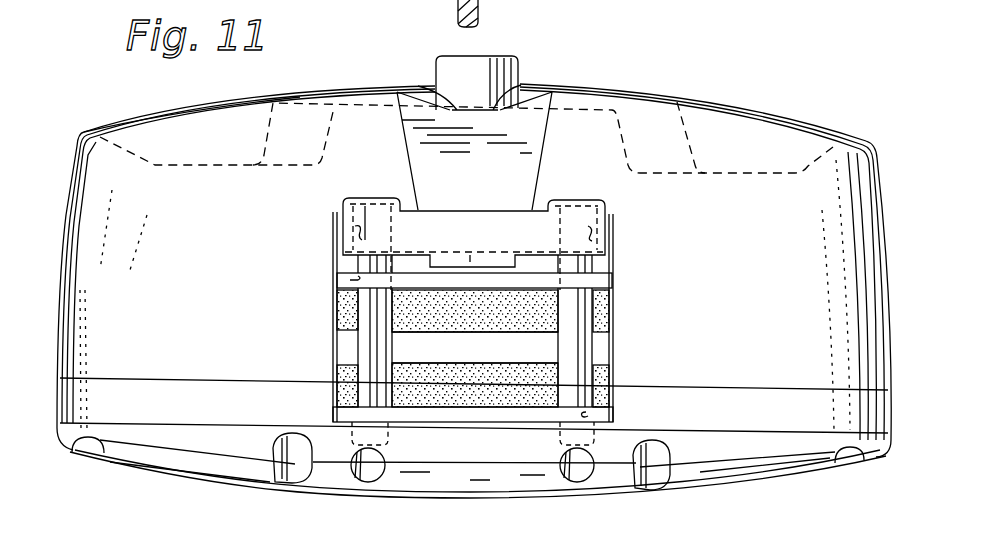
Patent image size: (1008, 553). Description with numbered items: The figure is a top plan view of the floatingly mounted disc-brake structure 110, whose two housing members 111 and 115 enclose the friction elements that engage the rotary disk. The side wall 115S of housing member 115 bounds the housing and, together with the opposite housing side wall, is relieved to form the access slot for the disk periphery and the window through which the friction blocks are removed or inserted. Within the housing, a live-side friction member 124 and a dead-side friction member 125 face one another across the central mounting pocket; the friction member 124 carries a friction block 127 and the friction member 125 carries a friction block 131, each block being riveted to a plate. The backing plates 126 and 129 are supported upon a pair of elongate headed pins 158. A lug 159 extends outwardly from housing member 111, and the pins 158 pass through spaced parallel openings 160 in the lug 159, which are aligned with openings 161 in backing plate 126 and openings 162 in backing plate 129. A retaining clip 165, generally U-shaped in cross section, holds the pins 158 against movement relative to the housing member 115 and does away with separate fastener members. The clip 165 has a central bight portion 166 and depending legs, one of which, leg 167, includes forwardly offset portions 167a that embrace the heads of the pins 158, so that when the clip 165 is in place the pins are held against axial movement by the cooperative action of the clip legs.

The housing 110 is at (716, 100).
The housing member 111 is at (179, 105).
The housing member 115 is at (229, 472).
The side wall 115S is at (885, 248).
The live-side friction member 124 is at (338, 302).
The dead-side friction member 125 is at (607, 379).
The backing plate 126 is at (614, 279).
The friction block 127 is at (606, 313).
The backing plate 129 is at (340, 413).
The friction block 131 is at (338, 368).
The headed pins 158 is at (362, 338).
The lug 159 is at (613, 238).
The openings 160 is at (354, 230).
The openings 161 is at (333, 270).
The openings 162 is at (615, 413).
The retaining clip 165 is at (430, 214).
The central bight portion 166 is at (474, 232).
The leg 167 is at (474, 211).
The forwardly offset portions 167a is at (370, 198).